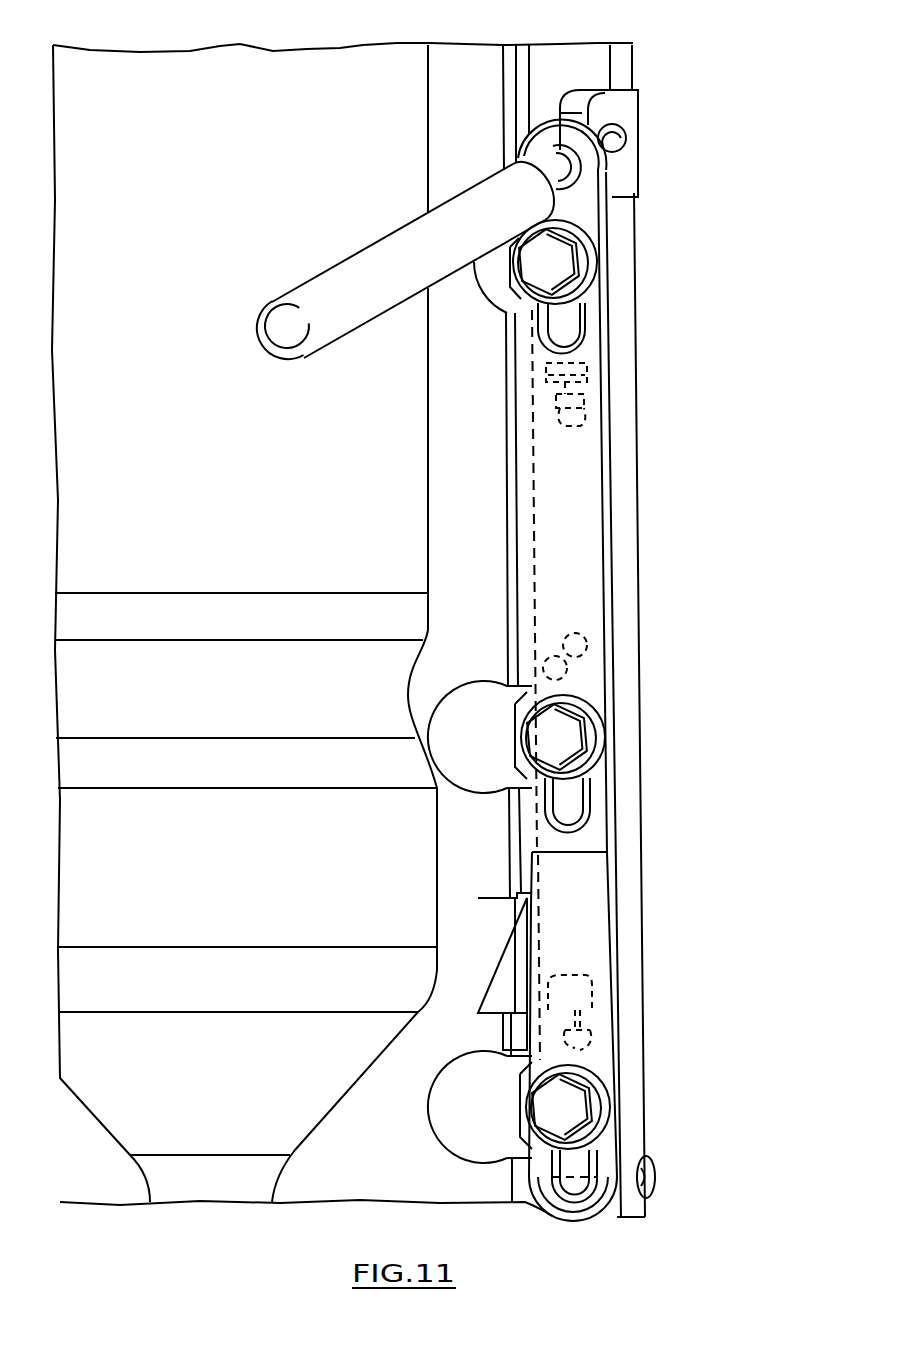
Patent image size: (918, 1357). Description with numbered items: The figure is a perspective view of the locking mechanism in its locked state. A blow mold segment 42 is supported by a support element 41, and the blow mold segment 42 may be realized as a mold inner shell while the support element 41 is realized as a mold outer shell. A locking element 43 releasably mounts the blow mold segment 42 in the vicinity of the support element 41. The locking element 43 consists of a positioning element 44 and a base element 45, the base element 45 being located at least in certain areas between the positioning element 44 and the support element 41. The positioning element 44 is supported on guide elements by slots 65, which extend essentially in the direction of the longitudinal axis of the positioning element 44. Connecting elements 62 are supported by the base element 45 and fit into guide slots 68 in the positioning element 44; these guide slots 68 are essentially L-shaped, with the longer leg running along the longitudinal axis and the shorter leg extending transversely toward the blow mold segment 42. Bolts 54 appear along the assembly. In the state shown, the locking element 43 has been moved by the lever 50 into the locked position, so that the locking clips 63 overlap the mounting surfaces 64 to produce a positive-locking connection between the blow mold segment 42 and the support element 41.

The support element 41 is at (557, 80).
The blow mold segment 42 is at (451, 90).
The locking element 43 is at (634, 589).
The positioning element 44 is at (592, 955).
The base element 45 is at (620, 927).
The lever 50 is at (330, 297).
The hexagon socket bolt 54 is at (560, 263).
The connecting elements 62 is at (585, 420).
The locking clips 63 is at (553, 790).
The mounting surfaces 64 is at (513, 693).
The slots 65 is at (577, 328).
The guide slots 68 is at (585, 395).